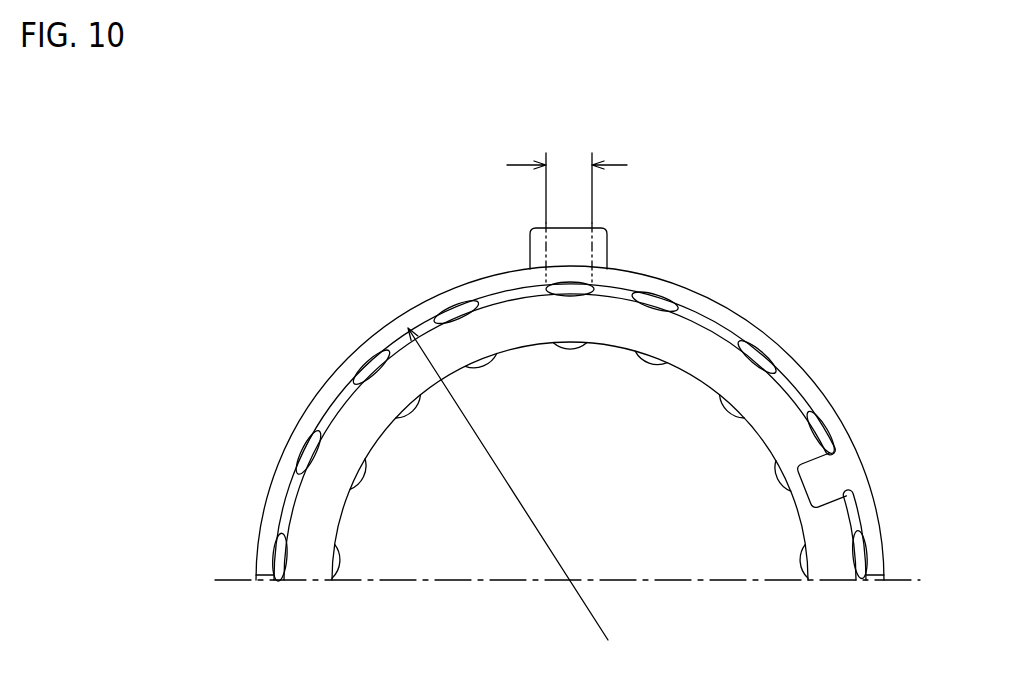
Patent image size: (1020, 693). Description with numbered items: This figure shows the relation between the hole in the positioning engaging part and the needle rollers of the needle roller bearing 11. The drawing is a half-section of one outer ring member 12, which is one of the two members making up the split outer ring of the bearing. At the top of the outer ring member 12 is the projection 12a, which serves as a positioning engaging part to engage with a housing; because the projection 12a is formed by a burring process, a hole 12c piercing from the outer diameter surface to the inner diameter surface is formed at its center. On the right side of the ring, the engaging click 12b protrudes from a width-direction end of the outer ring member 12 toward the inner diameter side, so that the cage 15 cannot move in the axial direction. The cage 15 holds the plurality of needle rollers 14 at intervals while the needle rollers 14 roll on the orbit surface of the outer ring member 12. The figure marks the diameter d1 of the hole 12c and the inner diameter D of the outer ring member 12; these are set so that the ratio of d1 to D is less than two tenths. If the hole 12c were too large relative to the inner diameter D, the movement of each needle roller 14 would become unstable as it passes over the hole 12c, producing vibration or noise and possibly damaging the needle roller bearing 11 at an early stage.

The needle roller bearing 11 is at (319, 300).
The outer ring member 12 is at (736, 320).
The projection 12a is at (600, 246).
The engaging click 12b is at (840, 475).
The hole 12c is at (565, 247).
The needle roller 14 is at (362, 475).
The cage 15 is at (778, 422).
The inner diameter of the outer ring member D is at (508, 484).
The diameter of the hole d1 is at (567, 179).